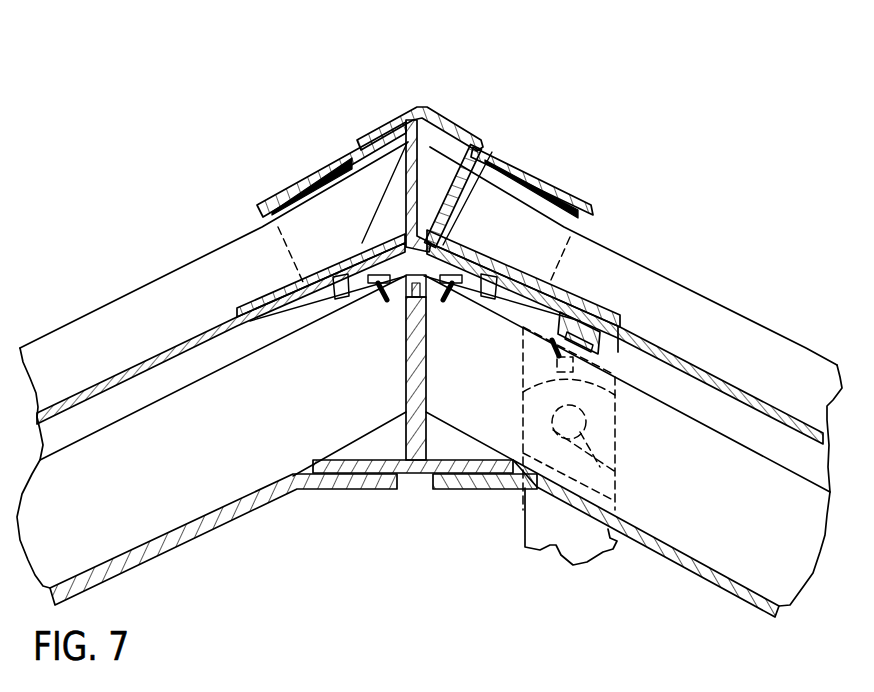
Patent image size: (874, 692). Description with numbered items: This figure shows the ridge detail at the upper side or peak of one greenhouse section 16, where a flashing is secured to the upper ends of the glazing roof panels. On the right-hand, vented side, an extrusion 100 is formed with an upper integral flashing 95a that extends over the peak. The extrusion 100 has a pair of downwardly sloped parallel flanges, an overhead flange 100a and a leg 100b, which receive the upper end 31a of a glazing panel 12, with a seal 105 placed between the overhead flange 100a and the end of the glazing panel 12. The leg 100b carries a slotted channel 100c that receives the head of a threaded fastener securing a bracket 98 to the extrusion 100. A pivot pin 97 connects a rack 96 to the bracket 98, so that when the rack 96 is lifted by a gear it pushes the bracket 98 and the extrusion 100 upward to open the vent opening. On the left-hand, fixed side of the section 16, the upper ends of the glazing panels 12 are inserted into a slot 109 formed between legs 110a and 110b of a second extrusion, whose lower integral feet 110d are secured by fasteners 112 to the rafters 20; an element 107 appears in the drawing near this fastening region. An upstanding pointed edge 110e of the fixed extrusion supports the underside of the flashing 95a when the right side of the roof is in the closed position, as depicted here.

The glazing panel 12 is at (164, 290).
The greenhouse section 16 is at (110, 263).
The rafter 20 is at (217, 466).
The upper end of glazing panel 31a is at (645, 285).
The flashing 95a is at (400, 118).
The rack 96 is at (553, 547).
The pivot pin 97 is at (610, 473).
The bracket 98 is at (523, 377).
The extrusion 100 is at (428, 157).
The overhead flange 100a is at (566, 194).
The leg 100b is at (560, 292).
The slotted channel 100c is at (617, 352).
The seal 105 is at (521, 186).
The clip 107 is at (580, 330).
The slot 109 is at (392, 166).
The leg 110a is at (296, 186).
The leg 110b is at (308, 300).
The connector foot 110d is at (357, 272).
The upstanding pointed edge 110e is at (415, 125).
The fastener 112 is at (384, 303).